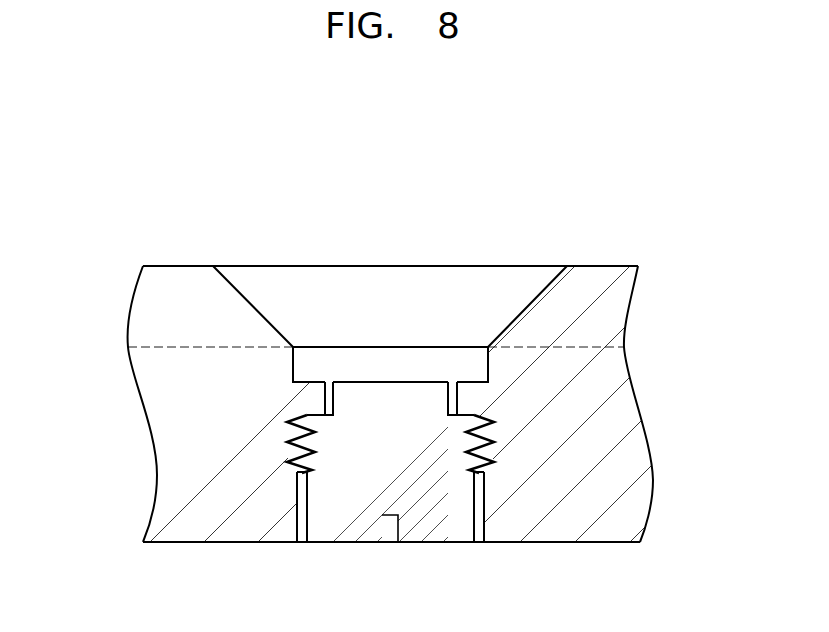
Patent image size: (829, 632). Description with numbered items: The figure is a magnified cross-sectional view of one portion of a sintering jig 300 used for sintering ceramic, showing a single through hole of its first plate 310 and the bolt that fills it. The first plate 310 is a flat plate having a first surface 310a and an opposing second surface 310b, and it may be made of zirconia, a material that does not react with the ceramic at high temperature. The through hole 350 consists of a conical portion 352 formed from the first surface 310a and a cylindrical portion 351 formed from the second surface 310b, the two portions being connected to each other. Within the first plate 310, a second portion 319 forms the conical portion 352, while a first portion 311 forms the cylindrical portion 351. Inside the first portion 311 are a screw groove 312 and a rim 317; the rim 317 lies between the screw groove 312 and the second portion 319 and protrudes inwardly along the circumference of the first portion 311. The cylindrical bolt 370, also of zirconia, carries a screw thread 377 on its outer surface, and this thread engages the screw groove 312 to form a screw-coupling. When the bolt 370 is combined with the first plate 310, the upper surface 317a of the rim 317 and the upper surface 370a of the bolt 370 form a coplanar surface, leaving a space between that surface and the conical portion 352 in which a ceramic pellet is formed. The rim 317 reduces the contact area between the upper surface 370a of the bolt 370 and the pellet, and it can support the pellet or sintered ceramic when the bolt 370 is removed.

The sintering jig 300 is at (562, 208).
The first plate 310 is at (745, 303).
The first surface 310a is at (600, 266).
The second surface 310b is at (600, 542).
The second portion 319 is at (617, 310).
The first portion 311 is at (617, 417).
The rim 317 is at (466, 398).
The upper surface of the rim 317a is at (478, 381).
The through hole 350 is at (405, 192).
The cylindrical portion 351 is at (408, 363).
The conical portion 352 is at (363, 307).
The bolt 370 is at (355, 483).
The upper surface of the bolt 370a is at (387, 382).
The screw thread 377 is at (300, 468).
The screw groove 312 is at (483, 468).